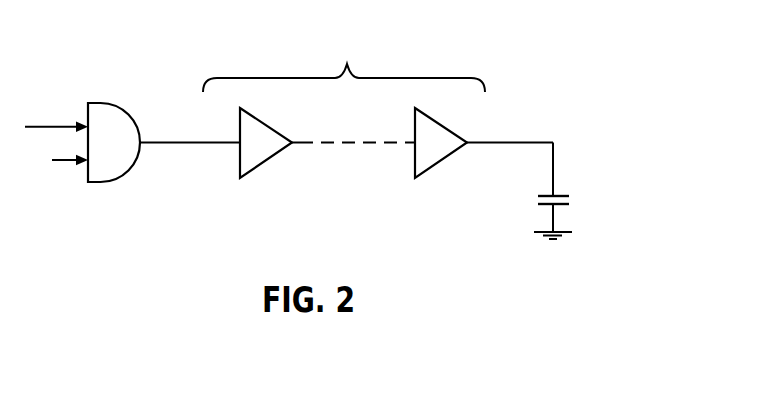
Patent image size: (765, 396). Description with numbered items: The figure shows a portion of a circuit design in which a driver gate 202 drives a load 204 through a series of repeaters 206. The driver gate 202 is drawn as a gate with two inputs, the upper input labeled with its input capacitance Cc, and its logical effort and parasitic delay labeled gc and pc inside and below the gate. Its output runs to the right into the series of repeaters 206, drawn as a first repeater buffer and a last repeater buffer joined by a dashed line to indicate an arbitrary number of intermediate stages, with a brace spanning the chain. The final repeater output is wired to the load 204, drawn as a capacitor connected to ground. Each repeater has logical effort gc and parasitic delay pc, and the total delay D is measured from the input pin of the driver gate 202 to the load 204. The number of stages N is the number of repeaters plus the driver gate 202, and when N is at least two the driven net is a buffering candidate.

The driver gate 202 is at (82, 132).
The load 204 is at (579, 191).
The series of repeaters 206 is at (344, 95).